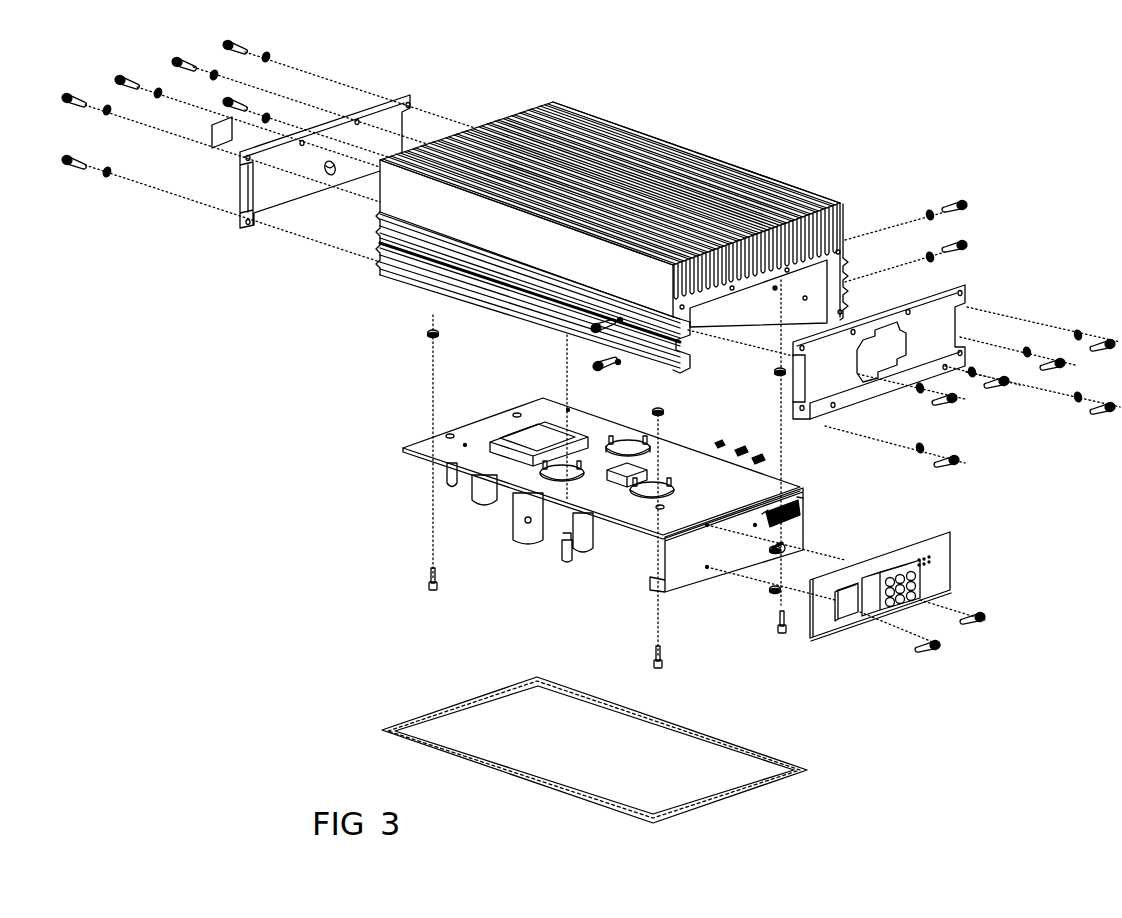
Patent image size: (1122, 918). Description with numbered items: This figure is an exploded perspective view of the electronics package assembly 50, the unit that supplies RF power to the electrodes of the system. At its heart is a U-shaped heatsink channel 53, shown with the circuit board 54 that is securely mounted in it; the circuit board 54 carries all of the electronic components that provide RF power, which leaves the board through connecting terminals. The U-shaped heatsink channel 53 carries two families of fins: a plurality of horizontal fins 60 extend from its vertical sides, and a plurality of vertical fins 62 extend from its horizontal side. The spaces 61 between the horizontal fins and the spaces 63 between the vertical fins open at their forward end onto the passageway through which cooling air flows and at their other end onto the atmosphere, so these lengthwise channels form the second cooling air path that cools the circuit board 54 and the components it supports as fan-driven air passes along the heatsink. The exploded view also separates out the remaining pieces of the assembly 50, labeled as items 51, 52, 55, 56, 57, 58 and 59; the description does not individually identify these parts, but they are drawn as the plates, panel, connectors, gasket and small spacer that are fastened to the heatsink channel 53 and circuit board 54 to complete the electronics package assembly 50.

The electronics package assembly 50 is at (256, 544).
The side plate 51 is at (273, 187).
The end bracket plate 52 is at (930, 333).
The U-shaped heatsink channel 53 is at (603, 178).
The circuit board 54 is at (470, 452).
The front panel 55 is at (683, 555).
The connector 56 is at (790, 512).
The gasket 57 is at (755, 752).
The insulator plate 58 is at (220, 135).
The connector board 59 is at (950, 566).
The horizontal fins 60 is at (383, 235).
The spaces between horizontal fins 61 is at (392, 258).
The vertical fins 62 is at (800, 212).
The spaces between vertical fins 63 is at (826, 210).